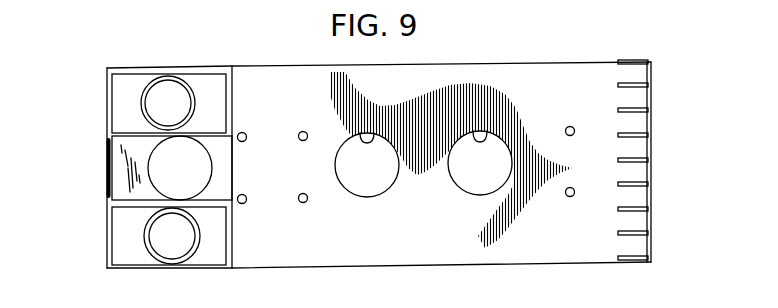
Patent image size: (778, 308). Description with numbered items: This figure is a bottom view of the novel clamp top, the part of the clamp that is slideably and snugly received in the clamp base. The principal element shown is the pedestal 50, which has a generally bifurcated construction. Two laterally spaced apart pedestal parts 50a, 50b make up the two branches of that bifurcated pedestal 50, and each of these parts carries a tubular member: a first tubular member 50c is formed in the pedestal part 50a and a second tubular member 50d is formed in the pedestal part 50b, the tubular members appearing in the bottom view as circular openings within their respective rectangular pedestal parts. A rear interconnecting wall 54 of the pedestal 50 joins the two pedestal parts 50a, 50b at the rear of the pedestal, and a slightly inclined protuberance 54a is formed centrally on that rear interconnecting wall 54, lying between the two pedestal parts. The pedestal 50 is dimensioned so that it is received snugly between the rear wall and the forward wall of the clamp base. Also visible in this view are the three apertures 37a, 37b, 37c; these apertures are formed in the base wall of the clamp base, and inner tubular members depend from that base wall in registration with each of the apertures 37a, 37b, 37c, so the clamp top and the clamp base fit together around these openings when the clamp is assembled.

The pedestal 50 is at (120, 68).
The pedestal part 50a is at (110, 232).
The pedestal part 50b is at (107, 98).
The tubular member 50c is at (190, 258).
The tubular member 50d is at (196, 98).
The rear interconnecting wall 54 is at (107, 152).
The inclined protuberance 54a is at (107, 172).
The aperture 37a is at (214, 180).
The aperture 37b is at (360, 136).
The aperture 37c is at (480, 134).